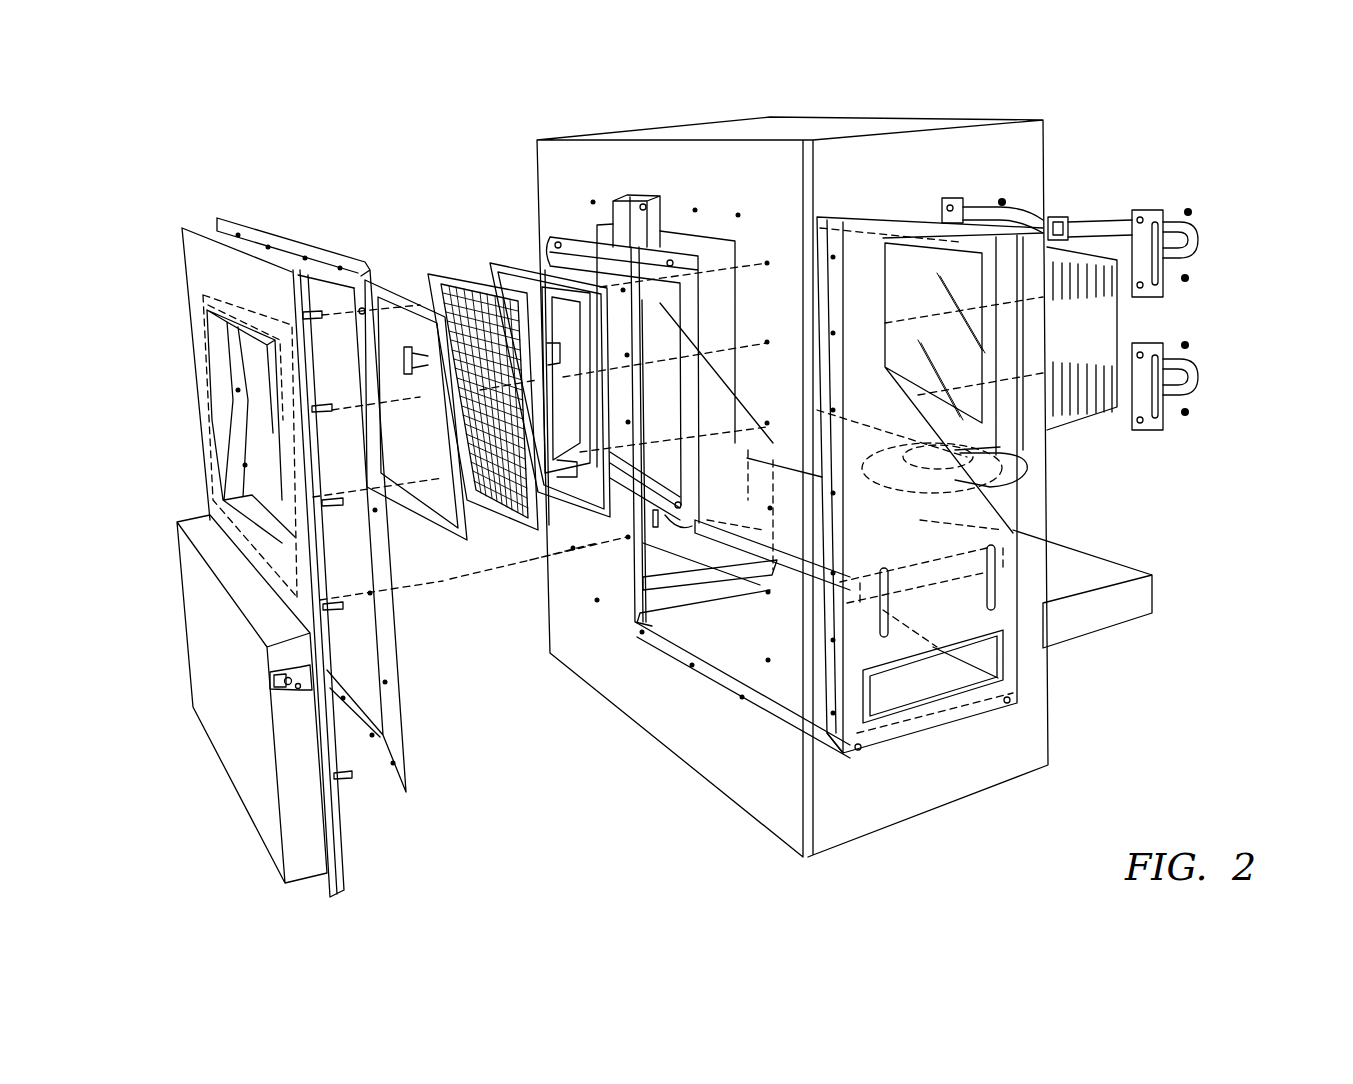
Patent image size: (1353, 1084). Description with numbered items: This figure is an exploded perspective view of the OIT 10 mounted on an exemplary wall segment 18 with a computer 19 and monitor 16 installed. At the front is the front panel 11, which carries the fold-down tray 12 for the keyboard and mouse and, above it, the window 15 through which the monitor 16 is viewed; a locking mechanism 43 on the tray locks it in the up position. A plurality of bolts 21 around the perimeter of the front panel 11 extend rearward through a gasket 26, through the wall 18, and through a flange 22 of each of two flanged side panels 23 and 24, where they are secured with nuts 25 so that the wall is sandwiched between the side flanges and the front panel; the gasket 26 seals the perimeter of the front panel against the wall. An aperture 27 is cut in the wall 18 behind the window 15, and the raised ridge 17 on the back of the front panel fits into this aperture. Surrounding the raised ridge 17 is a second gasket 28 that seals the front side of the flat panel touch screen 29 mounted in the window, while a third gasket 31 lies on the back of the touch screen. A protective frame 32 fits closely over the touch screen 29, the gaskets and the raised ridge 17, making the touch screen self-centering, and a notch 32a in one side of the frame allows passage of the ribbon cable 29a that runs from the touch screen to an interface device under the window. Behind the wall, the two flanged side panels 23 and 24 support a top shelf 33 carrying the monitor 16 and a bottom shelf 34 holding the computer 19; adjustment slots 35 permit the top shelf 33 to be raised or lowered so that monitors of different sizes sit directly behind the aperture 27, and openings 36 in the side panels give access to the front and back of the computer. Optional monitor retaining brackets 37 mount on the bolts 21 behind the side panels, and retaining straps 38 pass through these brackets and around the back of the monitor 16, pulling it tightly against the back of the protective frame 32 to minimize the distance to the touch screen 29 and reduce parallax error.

The OIT 10 is at (334, 202).
The front panel 11 is at (203, 290).
The fold-down tray 12 is at (233, 790).
The window 15 is at (225, 452).
The monitor 16 is at (1040, 442).
The raised ridge 17 is at (313, 387).
The wall segment 18 is at (640, 730).
The computer 19 is at (1110, 557).
The bolts 21 is at (322, 418).
The flange 22 is at (643, 428).
The flanged side panel 23 is at (663, 210).
The flanged side panel 24 is at (862, 218).
The nuts 25 is at (1000, 200).
The gasket 26 is at (405, 670).
The aperture 27 is at (737, 330).
The second gasket 28 is at (428, 520).
The flat panel touch screen 29 is at (500, 510).
The ribbon cable 29a is at (422, 346).
The third gasket 31 is at (583, 508).
The protective frame 32 is at (699, 335).
The notch 32a is at (537, 290).
The top shelf 33 is at (792, 563).
The bottom shelf 34 is at (783, 702).
The adjustment slots 35 is at (987, 587).
The openings 36 is at (688, 578).
The monitor retaining brackets 37 is at (952, 197).
The retaining straps 38 is at (1200, 241).
The locking mechanism 43 is at (303, 692).